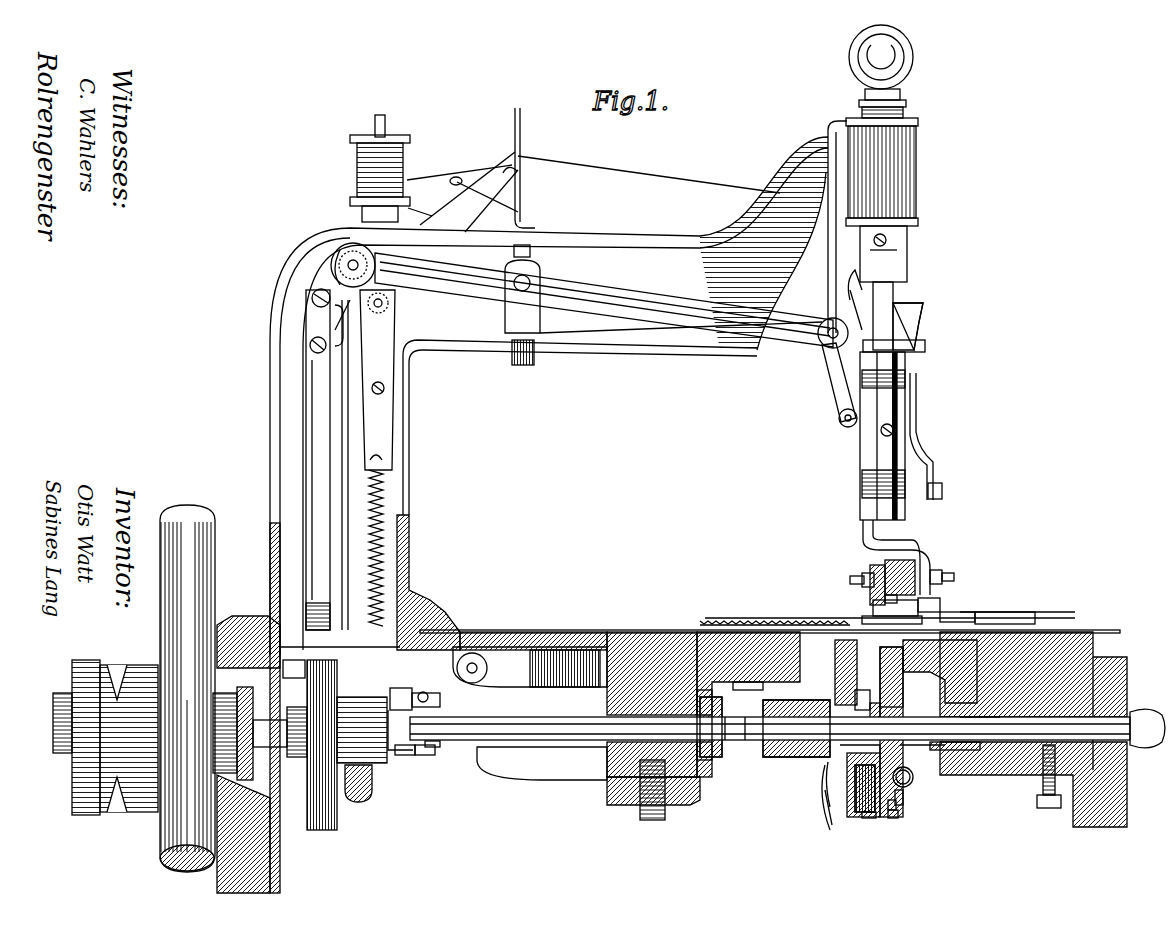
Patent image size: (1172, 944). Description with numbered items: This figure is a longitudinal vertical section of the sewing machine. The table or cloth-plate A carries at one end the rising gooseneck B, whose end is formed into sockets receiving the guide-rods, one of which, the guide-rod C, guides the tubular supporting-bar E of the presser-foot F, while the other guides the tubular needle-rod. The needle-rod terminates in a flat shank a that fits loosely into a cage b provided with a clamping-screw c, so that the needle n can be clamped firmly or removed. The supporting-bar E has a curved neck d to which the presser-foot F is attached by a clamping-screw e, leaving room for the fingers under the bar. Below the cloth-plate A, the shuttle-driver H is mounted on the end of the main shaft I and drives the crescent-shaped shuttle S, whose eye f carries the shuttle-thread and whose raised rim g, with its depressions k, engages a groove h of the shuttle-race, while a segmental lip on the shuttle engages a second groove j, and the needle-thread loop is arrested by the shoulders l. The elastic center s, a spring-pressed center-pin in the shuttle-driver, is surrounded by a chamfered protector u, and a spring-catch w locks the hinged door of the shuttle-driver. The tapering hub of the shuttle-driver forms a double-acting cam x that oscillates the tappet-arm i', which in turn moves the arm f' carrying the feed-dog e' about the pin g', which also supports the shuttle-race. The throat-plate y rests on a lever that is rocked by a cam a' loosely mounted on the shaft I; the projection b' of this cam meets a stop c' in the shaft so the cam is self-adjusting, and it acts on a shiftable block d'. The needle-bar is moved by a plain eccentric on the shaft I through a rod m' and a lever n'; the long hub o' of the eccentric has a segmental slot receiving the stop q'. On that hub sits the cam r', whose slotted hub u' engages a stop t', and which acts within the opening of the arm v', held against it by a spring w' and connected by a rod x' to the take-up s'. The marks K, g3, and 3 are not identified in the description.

The table or cloth-plate A is at (770, 621).
The gooseneck B is at (611, 295).
The guide-rod C is at (908, 313).
The tubular supporting-bar E is at (924, 436).
The presser-foot F is at (892, 611).
The shuttle-driver H is at (836, 685).
The main shaft I is at (746, 742).
The shuttle carrier K is at (905, 765).
The shuttle S is at (876, 818).
The flat shank a is at (873, 590).
The cam a' is at (710, 737).
The cage b is at (920, 570).
The projection b' is at (726, 725).
The clamping-screw c is at (901, 574).
The stop c' is at (731, 746).
The curved neck d is at (901, 557).
The shoe or block d' is at (748, 688).
The clamping-screw e is at (850, 286).
The feed-dog e' is at (942, 595).
The eye f is at (915, 795).
The lever or arm f' is at (1005, 608).
The raised rim g is at (883, 828).
The pin g' is at (981, 745).
The throat plate g3 is at (948, 616).
The groove h is at (899, 815).
The tappet-arm i' is at (824, 816).
The groove j is at (897, 805).
The depressions k is at (859, 677).
The shoulders l is at (916, 671).
The rod m' is at (314, 460).
The needle n is at (646, 681).
The lever n' is at (681, 298).
The long hub o' is at (449, 759).
The stop q' is at (436, 766).
The cam r' is at (368, 788).
The elastic center s is at (928, 764).
The take-up s' is at (426, 208).
The stop t' is at (414, 710).
The protector u is at (862, 700).
The slotted hub u' is at (367, 720).
The arm v' is at (311, 739).
The spring-catch w is at (822, 785).
The spring w' is at (367, 540).
The double-acting cam x is at (796, 727).
The rod x' is at (350, 465).
The throat-plate y is at (858, 620).
The cam 3 is at (352, 312).